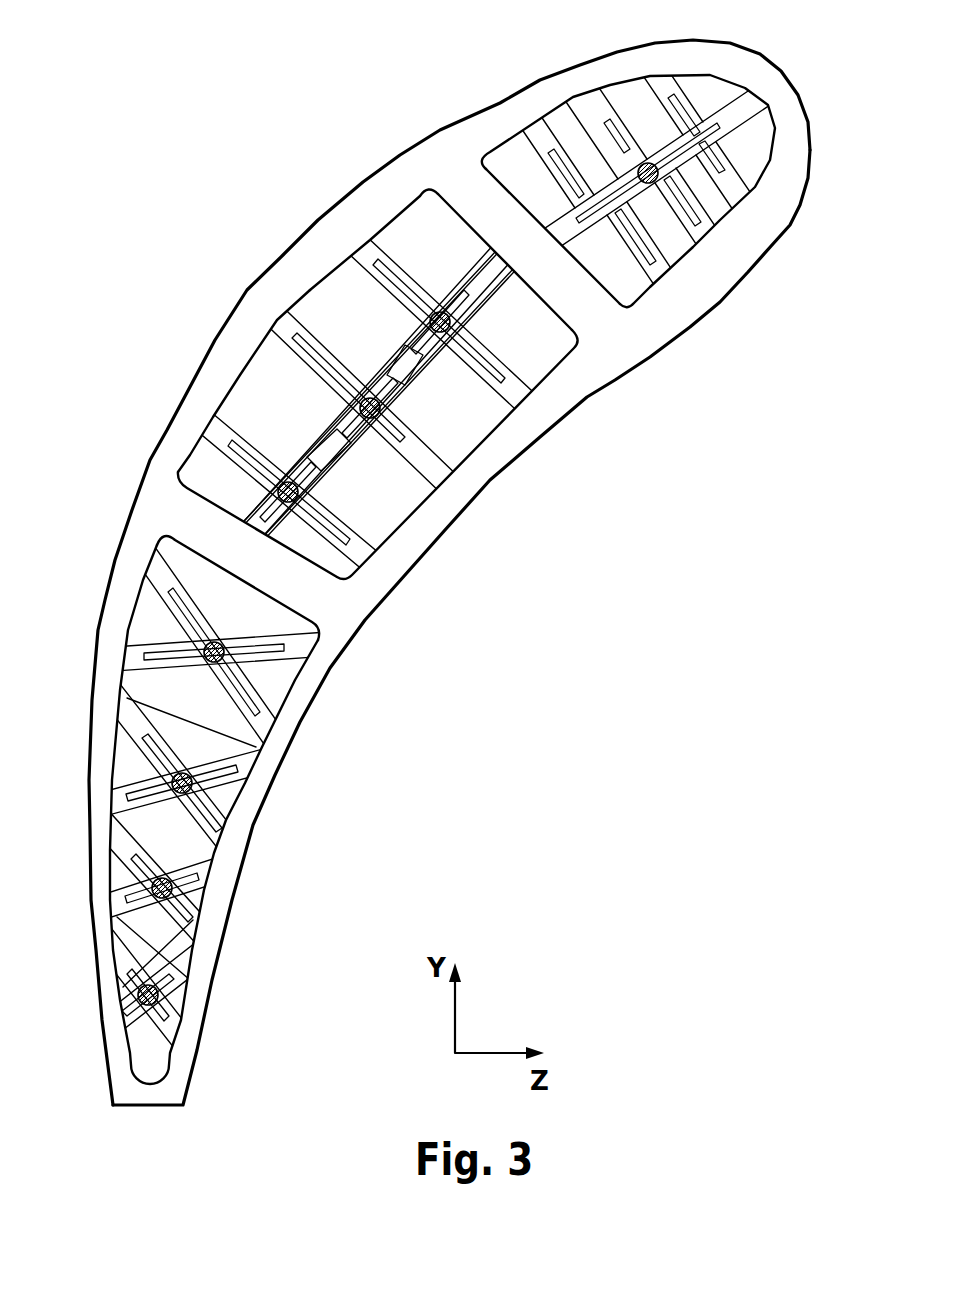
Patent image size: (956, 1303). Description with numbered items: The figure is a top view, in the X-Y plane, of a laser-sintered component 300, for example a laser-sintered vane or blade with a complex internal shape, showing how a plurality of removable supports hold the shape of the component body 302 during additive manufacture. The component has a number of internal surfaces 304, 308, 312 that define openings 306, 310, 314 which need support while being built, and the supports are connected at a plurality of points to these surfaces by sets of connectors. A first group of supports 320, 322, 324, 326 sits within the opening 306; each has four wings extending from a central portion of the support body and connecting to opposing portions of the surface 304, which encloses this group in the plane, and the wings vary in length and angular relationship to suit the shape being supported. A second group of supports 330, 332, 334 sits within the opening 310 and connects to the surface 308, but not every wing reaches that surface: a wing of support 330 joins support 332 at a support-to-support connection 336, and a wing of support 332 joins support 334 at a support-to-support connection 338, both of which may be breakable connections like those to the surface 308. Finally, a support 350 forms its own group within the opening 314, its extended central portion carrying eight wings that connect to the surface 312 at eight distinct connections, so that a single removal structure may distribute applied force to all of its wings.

The laser-sintered component 300 is at (276, 207).
The component body 302 is at (190, 400).
The internal surface 304 is at (295, 692).
The opening 306 is at (273, 622).
The internal surface 308 is at (400, 510).
The opening 310 is at (450, 418).
The internal surface 312 is at (625, 313).
The opening 314 is at (723, 207).
The removable support 320 is at (177, 967).
The removable support 322 is at (203, 867).
The removable support 324 is at (243, 762).
The removable support 326 is at (163, 575).
The removable support 330 is at (213, 433).
The removable support 332 is at (277, 322).
The removable support 334 is at (372, 252).
The support-to-support connection 336 is at (317, 437).
The support-to-support connection 338 is at (397, 352).
The removable support 350 is at (540, 137).